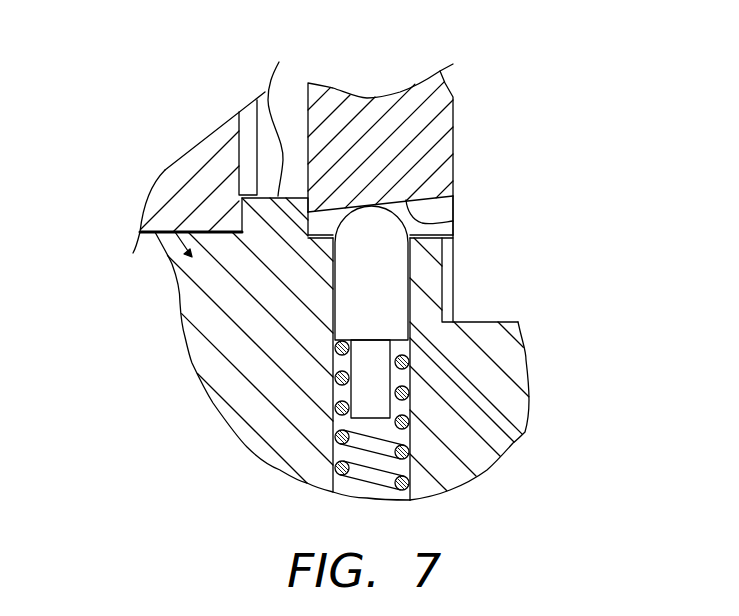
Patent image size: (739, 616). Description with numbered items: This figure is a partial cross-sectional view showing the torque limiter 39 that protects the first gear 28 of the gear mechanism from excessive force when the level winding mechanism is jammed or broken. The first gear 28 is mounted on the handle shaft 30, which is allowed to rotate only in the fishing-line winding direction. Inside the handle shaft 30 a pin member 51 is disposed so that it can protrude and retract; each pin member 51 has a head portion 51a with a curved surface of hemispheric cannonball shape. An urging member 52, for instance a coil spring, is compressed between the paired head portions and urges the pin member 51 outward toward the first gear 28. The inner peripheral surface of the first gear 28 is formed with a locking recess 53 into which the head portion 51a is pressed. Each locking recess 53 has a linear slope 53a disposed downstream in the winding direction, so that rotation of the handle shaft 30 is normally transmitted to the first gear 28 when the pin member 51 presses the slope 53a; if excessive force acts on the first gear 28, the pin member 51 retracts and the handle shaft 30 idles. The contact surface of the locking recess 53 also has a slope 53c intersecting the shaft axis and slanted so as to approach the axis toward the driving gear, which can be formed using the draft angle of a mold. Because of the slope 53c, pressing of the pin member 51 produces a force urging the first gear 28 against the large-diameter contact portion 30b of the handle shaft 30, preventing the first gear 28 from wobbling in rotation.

The first gear 28 is at (445, 83).
The handle shaft 30 is at (172, 264).
The large-diameter contact portion 30b is at (279, 62).
The torque limiter 39 is at (428, 313).
The pin member 51 is at (422, 212).
The head portion 51a is at (393, 268).
The urging member 52 is at (410, 393).
The locking recess 53 is at (326, 247).
The slope 53a is at (332, 217).
The slope 53c is at (453, 221).